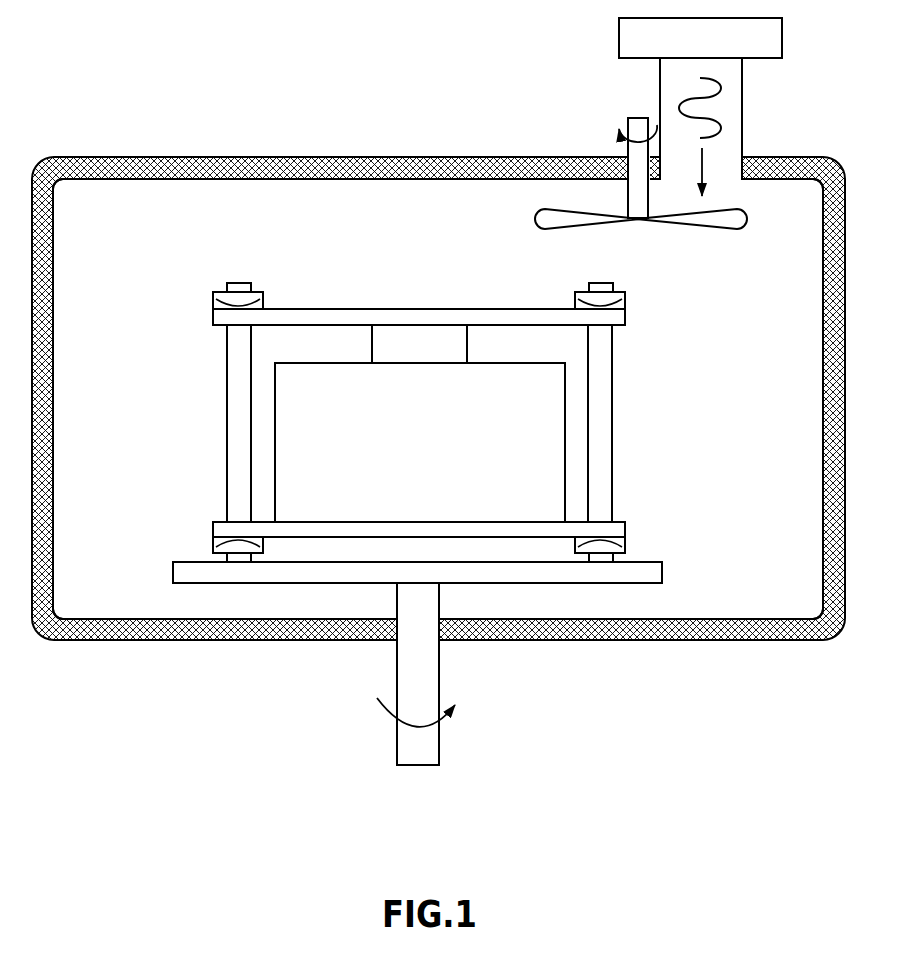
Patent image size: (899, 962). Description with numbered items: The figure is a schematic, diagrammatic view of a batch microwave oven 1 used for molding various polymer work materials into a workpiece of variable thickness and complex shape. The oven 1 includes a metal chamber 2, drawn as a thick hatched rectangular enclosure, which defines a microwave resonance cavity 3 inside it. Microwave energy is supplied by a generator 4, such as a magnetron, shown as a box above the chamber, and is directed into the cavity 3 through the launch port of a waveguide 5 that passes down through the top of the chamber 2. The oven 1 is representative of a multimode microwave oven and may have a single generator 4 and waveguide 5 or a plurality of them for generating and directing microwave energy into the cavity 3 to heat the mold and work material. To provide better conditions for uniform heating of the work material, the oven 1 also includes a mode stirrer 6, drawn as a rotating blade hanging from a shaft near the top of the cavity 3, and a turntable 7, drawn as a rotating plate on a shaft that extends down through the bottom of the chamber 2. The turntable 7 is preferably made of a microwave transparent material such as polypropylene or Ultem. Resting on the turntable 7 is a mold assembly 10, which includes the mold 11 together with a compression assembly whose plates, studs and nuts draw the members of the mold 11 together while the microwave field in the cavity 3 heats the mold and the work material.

The batch microwave oven 1 is at (438, 391).
The metal chamber 2 is at (283, 158).
The microwave resonance cavity 3 is at (362, 184).
The generator 4 is at (618, 37).
The waveguide 5 is at (637, 84).
The mode stirrer 6 is at (724, 204).
The turntable 7 is at (575, 587).
The mold assembly 10 is at (210, 405).
The mold 11 is at (272, 445).